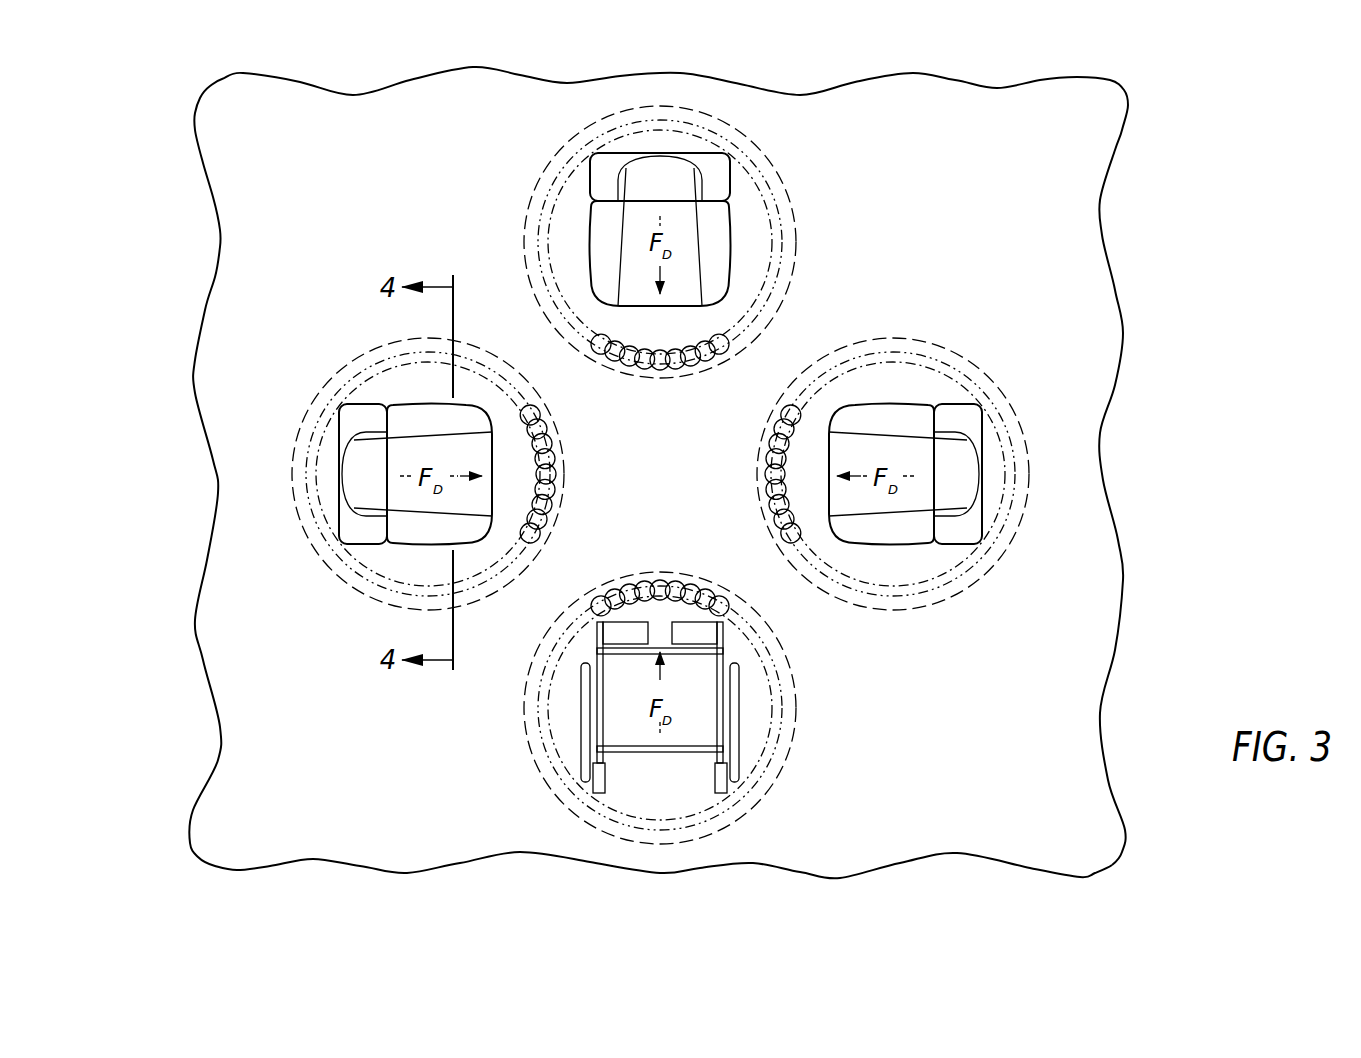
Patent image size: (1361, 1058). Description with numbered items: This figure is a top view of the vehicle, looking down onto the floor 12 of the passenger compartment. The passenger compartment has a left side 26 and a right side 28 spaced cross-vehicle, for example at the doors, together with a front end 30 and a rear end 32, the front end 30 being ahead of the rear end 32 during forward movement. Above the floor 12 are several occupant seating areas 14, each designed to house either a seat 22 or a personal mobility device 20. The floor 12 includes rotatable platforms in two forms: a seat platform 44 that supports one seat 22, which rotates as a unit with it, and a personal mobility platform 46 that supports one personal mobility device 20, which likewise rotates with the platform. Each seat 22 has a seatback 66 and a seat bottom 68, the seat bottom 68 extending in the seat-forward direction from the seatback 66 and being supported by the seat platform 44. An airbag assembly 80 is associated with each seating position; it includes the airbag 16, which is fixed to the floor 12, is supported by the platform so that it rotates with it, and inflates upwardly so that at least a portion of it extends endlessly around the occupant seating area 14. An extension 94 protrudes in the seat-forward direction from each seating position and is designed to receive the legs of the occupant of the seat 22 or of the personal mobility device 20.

The floor 12 is at (658, 475).
The occupant seating area 14 is at (683, 218).
The airbag 16 is at (556, 177).
The personal mobility device 20 is at (650, 760).
The seat 22 is at (710, 168).
The left side 26 is at (935, 870).
The right side 28 is at (397, 82).
The front end 30 is at (175, 672).
The rear end 32 is at (1140, 305).
The seat platform 44 is at (792, 146).
The personal mobility platform 46 is at (755, 806).
The seatback 66 is at (590, 167).
The seat bottom 68 is at (591, 225).
The airbag assembly 80 is at (589, 136).
The extension 94 is at (658, 372).